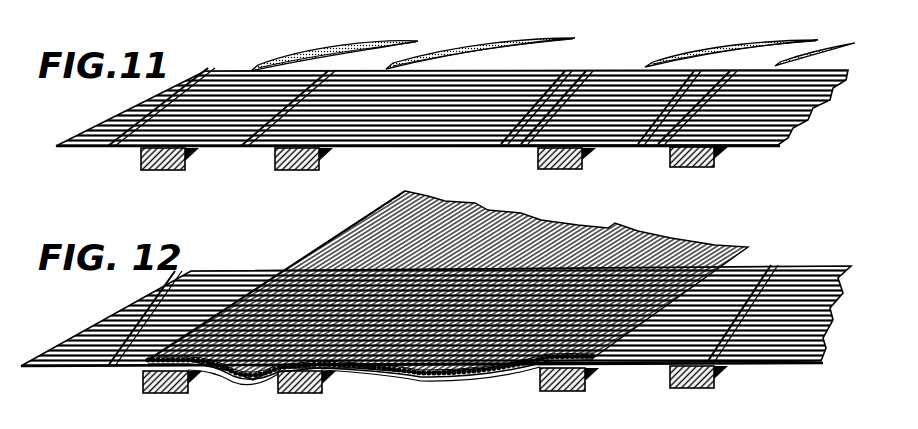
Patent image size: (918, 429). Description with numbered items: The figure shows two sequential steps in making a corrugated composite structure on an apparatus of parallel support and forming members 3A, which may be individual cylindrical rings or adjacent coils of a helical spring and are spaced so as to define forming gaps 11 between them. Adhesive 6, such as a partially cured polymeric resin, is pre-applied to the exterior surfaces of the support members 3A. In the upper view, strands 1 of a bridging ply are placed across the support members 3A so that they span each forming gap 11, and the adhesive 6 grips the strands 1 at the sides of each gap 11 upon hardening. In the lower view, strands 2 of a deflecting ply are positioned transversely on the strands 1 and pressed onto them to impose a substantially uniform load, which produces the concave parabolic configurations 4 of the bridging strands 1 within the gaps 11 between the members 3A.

In FIG. 11, the strands of the bridging ply 1 is at (588, 62).
In FIG. 12, the strands of the bridging ply 1 is at (780, 264).
In FIG. 12, the strands of the deflecting ply 2 is at (330, 233).
In FIG. 11, the support and forming members 3A is at (579, 146).
In FIG. 12, the support and forming members 3A is at (582, 368).
In FIG. 12, the concave parabolic configurations 4 is at (232, 374).
In FIG. 11, the adhesive 6 is at (133, 143).
In FIG. 12, the adhesive 6 is at (134, 368).
In FIG. 11, the forming gaps 11 is at (239, 152).